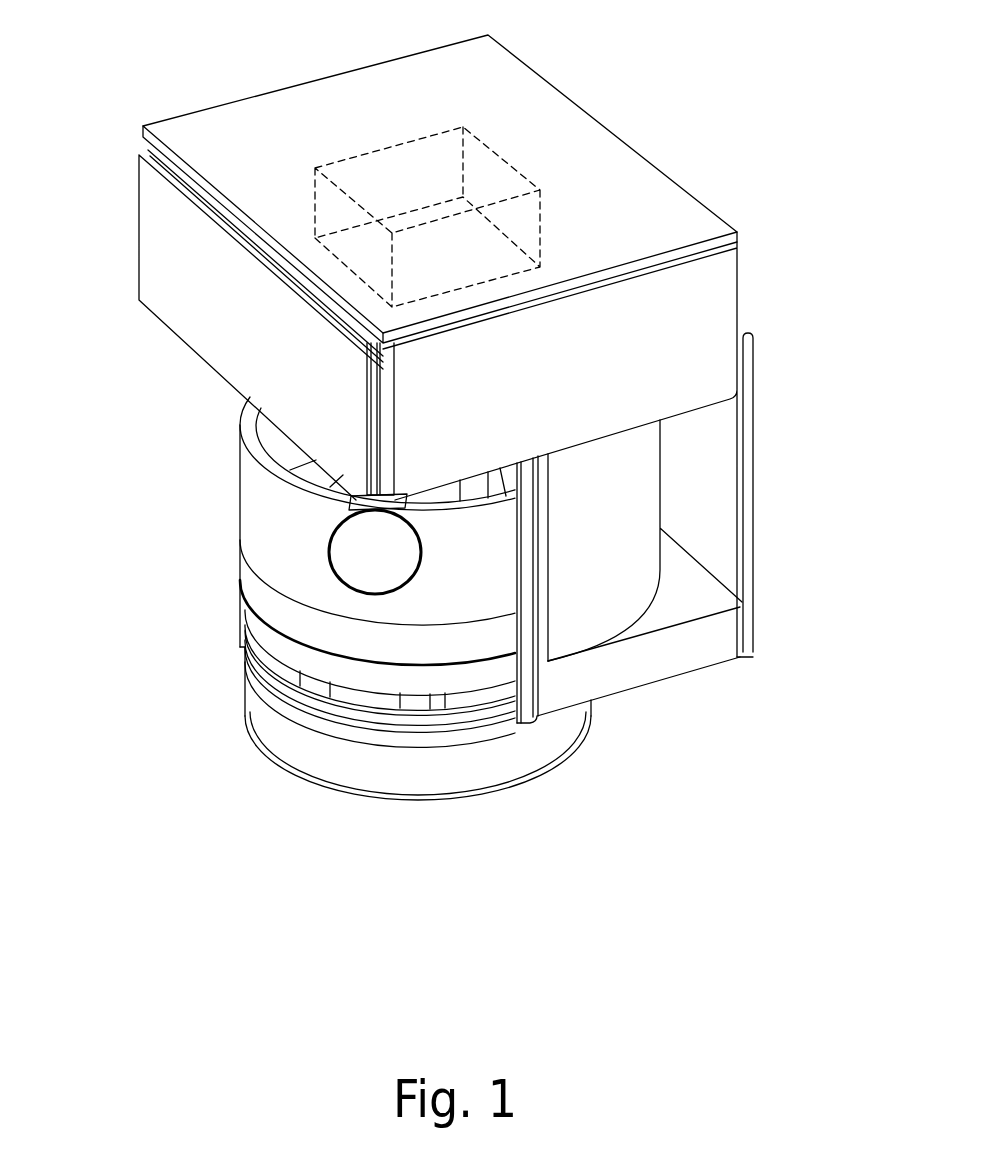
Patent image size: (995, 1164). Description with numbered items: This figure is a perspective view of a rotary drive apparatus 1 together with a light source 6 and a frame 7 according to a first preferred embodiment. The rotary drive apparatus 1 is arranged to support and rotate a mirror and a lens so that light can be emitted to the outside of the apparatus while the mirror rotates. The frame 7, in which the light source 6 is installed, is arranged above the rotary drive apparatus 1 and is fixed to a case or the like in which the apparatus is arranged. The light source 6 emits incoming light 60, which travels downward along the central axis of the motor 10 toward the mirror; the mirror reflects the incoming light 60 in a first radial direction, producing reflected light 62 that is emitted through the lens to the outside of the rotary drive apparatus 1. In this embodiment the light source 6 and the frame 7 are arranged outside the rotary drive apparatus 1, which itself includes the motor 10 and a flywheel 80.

The rotary drive apparatus 1 is at (183, 458).
The light source 6 is at (363, 180).
The frame 7 is at (666, 228).
The motor 10 is at (214, 679).
The incoming light 60 is at (493, 512).
The reflected light 62 is at (385, 427).
The flywheel 80 is at (188, 520).